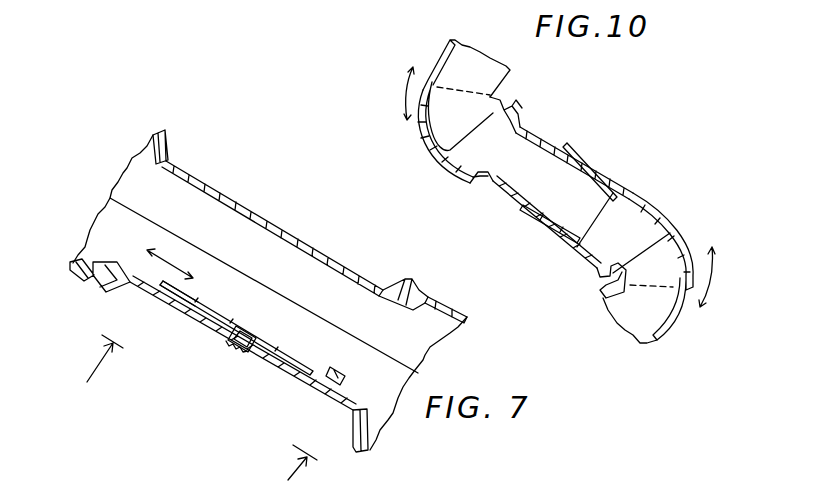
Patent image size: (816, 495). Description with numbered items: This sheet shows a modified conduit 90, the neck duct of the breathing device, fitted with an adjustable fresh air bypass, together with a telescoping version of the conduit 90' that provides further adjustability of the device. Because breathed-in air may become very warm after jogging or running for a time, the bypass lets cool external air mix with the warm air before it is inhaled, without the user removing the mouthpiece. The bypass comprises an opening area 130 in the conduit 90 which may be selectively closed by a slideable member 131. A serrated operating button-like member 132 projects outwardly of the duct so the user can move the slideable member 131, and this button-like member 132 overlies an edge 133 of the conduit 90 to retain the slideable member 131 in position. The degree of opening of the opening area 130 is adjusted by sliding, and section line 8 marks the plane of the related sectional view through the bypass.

In FIG. 7, the section line 8- 8 is at (202, 400).
In FIG. 7, the conduit 90 is at (388, 268).
In FIG. 10, the curved channel member 90' is at (525, 226).
In FIG. 7, the opening area 130 is at (313, 383).
In FIG. 7, the slideable member 131 is at (163, 303).
In FIG. 7, the serrated operating button-like member 132 is at (237, 350).
In FIG. 7, the edge of the conduit 133 is at (245, 332).